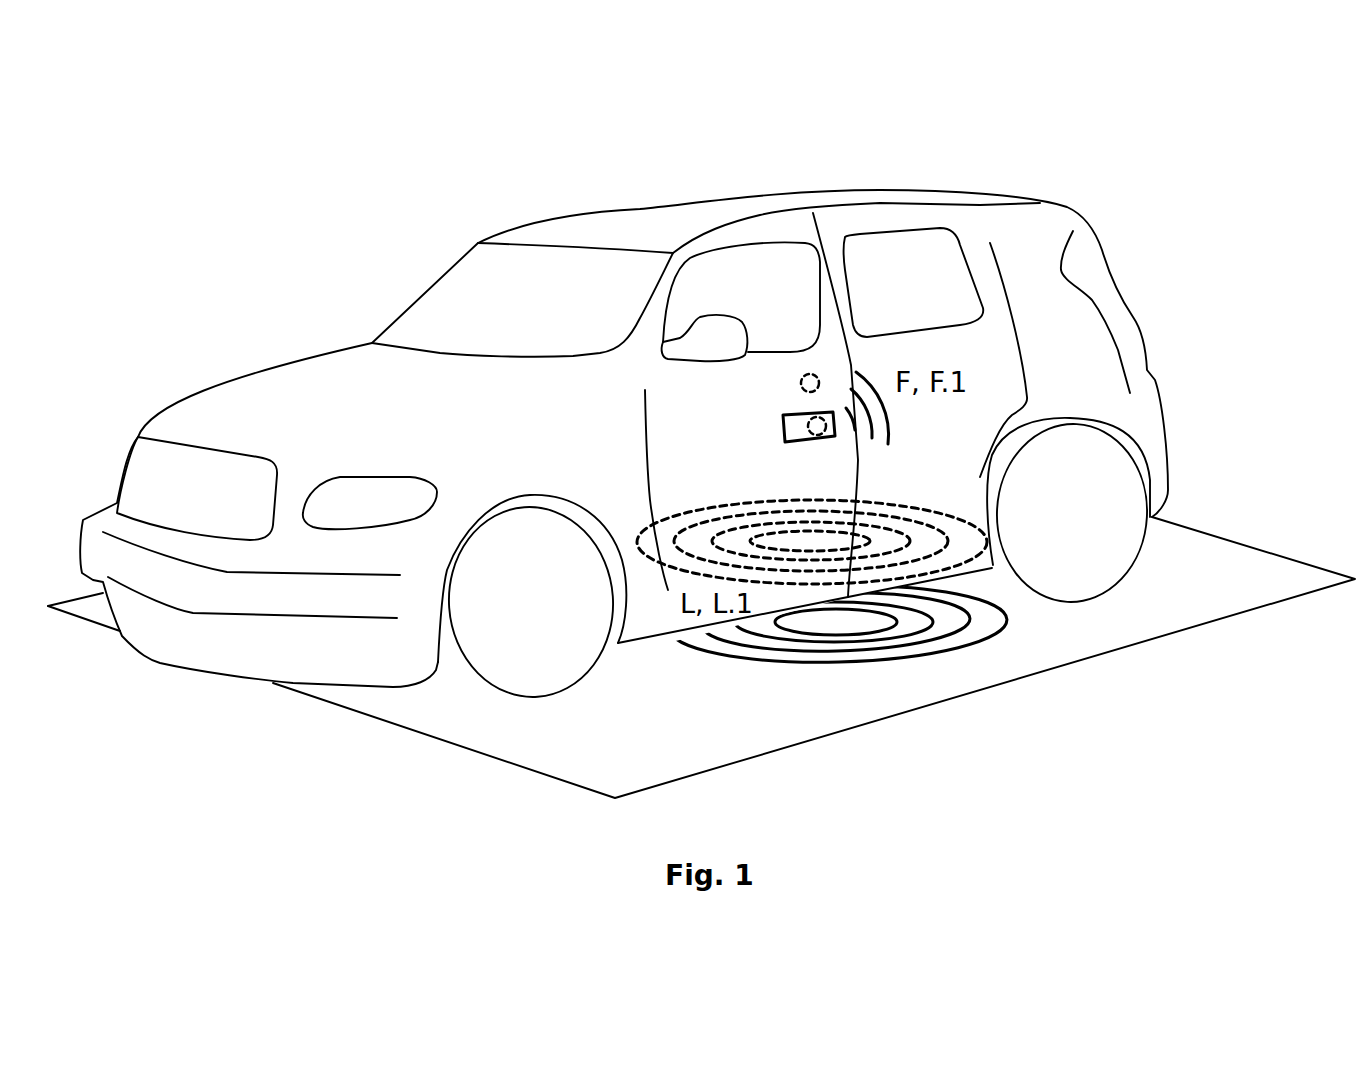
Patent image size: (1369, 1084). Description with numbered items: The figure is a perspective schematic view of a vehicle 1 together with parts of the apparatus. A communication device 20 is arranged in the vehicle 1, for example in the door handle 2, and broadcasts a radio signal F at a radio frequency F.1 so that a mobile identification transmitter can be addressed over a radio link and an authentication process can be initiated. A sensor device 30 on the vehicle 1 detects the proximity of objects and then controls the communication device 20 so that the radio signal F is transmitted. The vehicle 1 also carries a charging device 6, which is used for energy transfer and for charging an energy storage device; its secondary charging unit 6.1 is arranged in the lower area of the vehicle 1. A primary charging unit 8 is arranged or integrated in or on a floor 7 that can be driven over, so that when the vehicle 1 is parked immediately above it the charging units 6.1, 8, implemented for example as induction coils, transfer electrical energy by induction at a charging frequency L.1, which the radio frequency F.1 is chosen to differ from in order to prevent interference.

The vehicle 1 is at (543, 214).
The door handle 2 is at (791, 413).
The communication device 20 is at (823, 412).
The sensor device 30 is at (806, 374).
The charging device 6 is at (877, 695).
The secondary charging unit 6.1 is at (651, 561).
The floor 7 is at (1213, 594).
The primary charging unit 8 is at (847, 664).